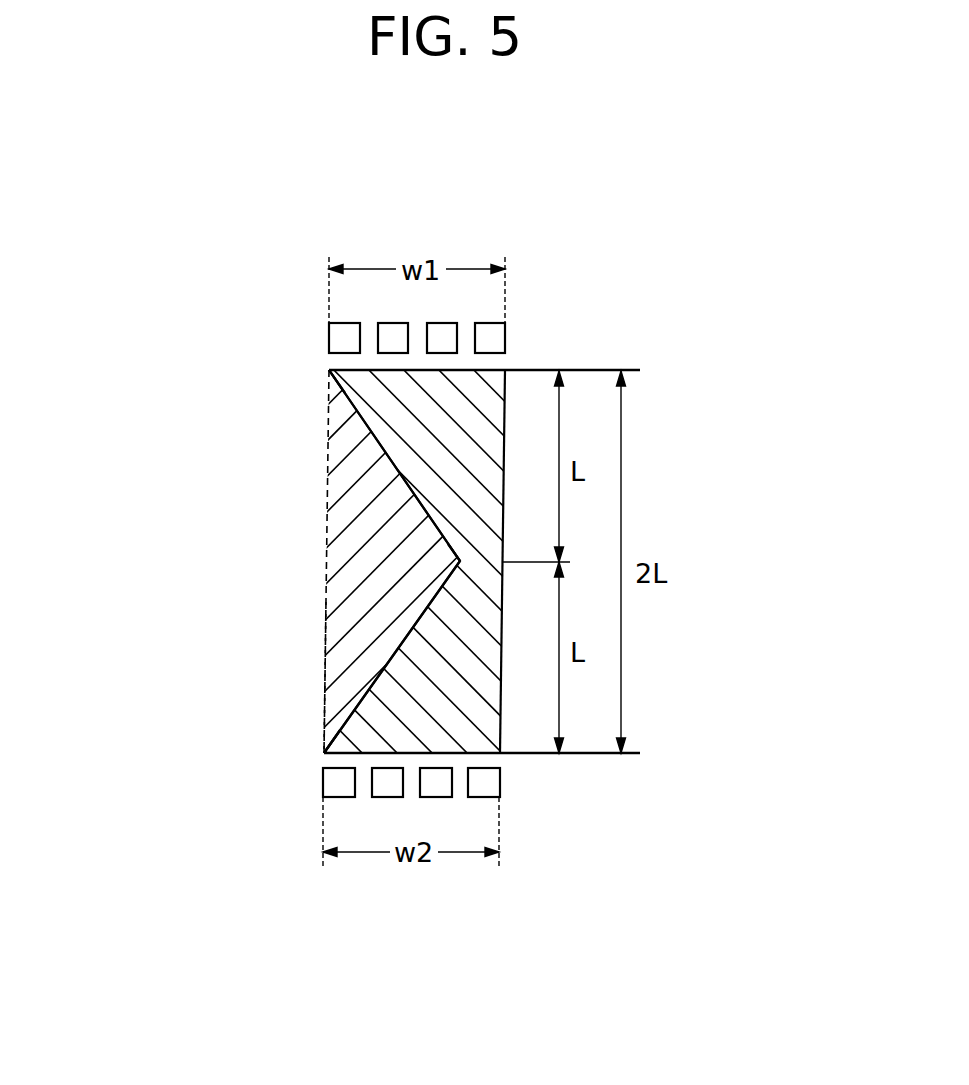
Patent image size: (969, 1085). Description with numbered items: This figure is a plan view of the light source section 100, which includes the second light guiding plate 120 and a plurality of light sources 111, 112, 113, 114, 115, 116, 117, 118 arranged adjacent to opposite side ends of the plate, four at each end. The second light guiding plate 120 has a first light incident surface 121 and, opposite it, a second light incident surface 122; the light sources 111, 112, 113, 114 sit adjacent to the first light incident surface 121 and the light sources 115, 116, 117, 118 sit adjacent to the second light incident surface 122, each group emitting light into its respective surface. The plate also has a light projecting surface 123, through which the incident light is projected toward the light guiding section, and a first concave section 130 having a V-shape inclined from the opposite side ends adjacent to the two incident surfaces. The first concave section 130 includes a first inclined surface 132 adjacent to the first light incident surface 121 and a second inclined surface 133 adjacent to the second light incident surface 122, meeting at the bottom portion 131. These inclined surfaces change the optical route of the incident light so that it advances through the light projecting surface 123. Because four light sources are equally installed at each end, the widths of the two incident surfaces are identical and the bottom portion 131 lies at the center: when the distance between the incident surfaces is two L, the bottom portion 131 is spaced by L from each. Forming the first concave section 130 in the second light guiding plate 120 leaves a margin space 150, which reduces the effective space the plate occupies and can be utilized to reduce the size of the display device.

The light source section 100 is at (672, 245).
The light source 111 is at (333, 342).
The light source 112 is at (336, 387).
The light source 113 is at (445, 335).
The light source 114 is at (499, 341).
The light source 115 is at (325, 774).
The light source 116 is at (335, 735).
The light source 117 is at (441, 786).
The light source 118 is at (495, 783).
The second light guiding plate 120 is at (660, 616).
The first light incident surface 121 is at (498, 371).
The second light incident surface 122 is at (330, 756).
The light projecting surface 123 is at (503, 705).
The first concave section 130 is at (408, 632).
The bottom portion 131 is at (462, 560).
The first inclined surface 132 is at (376, 440).
The second inclined surface 133 is at (372, 680).
The margin space 150 is at (355, 538).